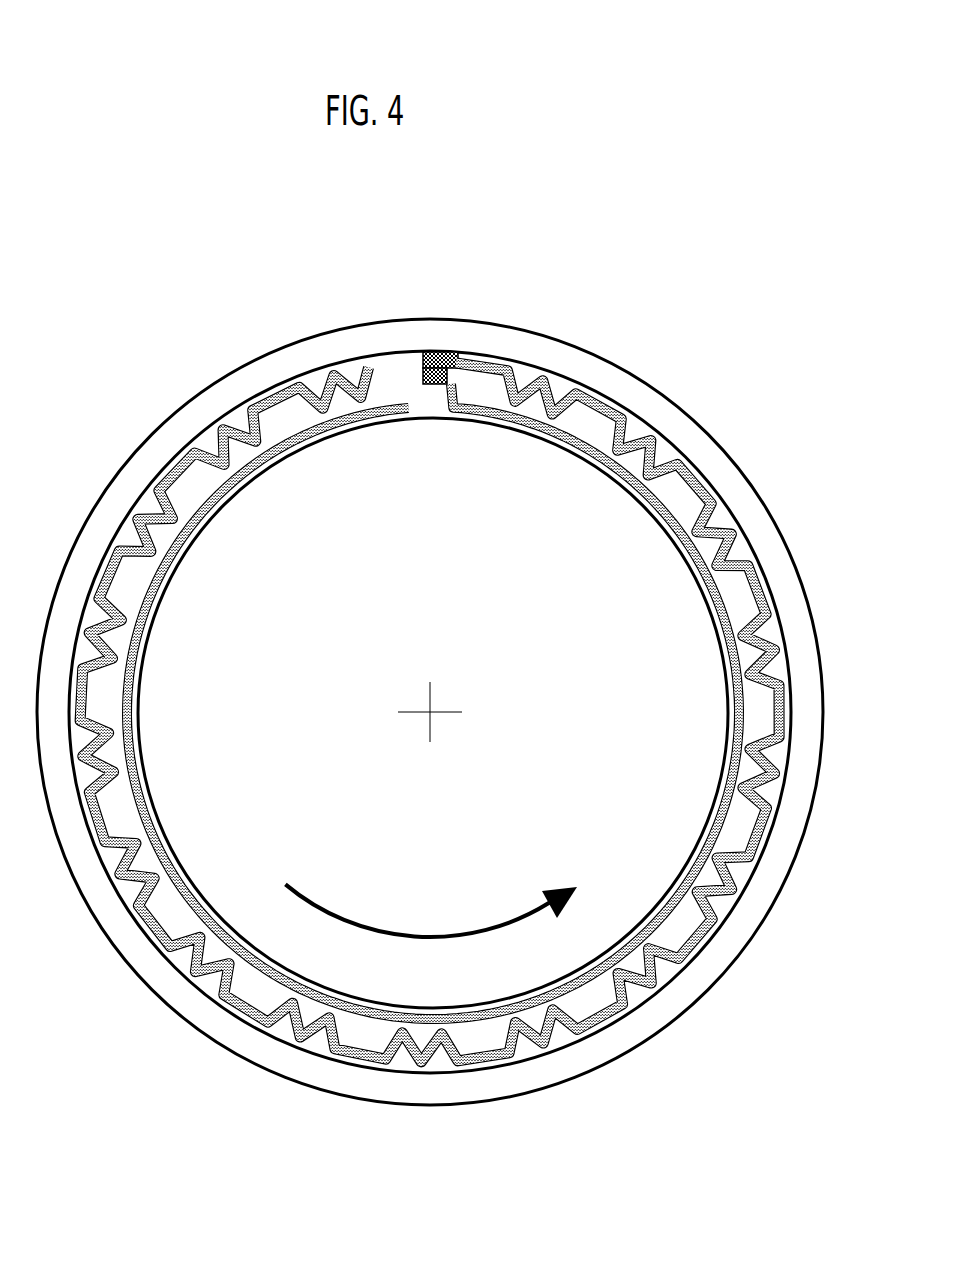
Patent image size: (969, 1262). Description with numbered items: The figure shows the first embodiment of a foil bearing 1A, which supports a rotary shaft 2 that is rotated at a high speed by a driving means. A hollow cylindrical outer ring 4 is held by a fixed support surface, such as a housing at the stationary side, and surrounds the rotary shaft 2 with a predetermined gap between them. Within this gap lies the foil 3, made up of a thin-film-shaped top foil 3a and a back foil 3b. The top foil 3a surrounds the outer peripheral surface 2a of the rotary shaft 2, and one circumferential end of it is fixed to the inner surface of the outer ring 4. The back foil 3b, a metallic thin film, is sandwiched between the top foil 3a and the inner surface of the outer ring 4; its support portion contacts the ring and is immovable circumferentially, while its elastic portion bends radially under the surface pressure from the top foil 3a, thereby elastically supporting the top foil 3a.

The foil bearing 1A is at (137, 160).
The rotary shaft 2 is at (583, 700).
The outer peripheral surface 2a is at (441, 404).
The foil 3 is at (636, 396).
The top foil 3a is at (212, 487).
The back foil 3b is at (263, 400).
The outer ring 4 is at (470, 345).